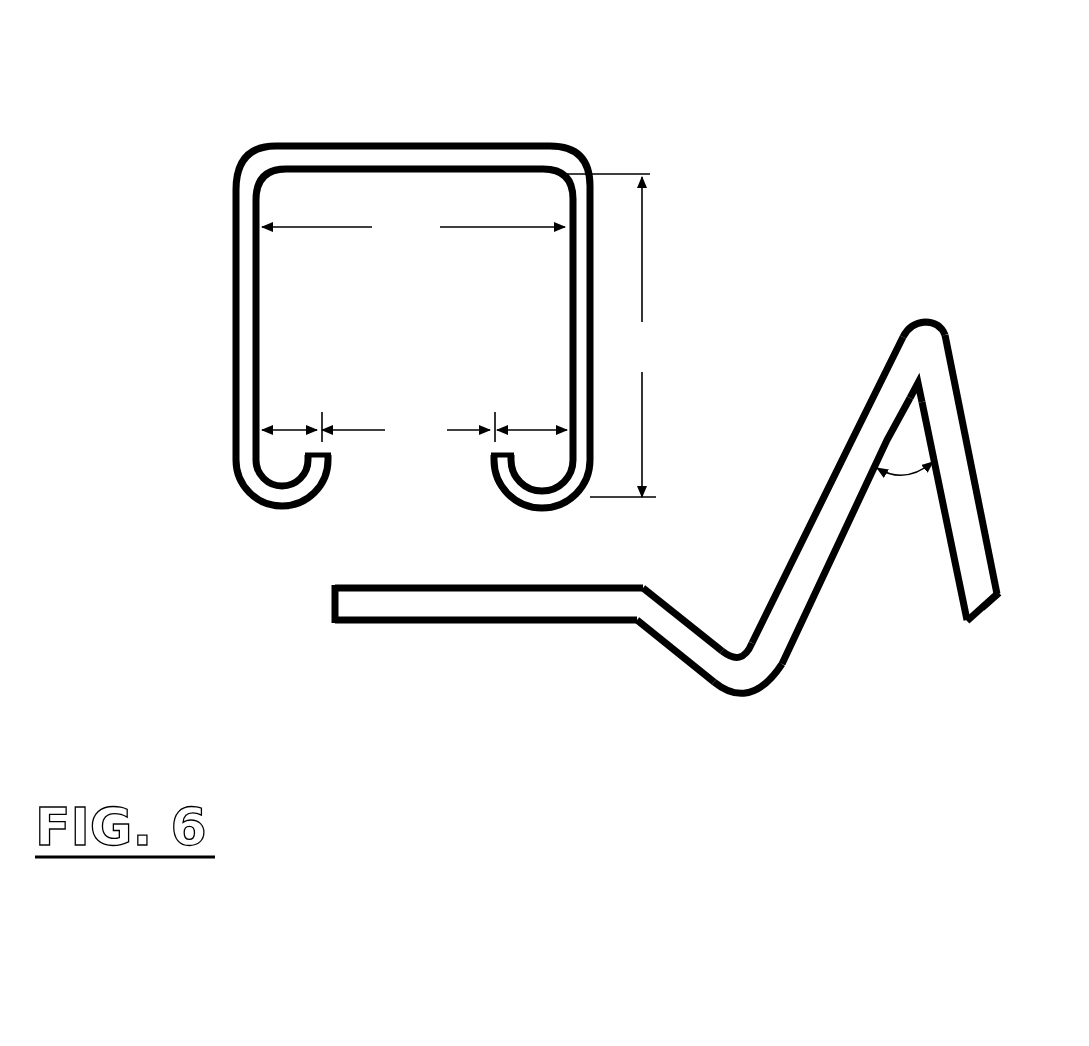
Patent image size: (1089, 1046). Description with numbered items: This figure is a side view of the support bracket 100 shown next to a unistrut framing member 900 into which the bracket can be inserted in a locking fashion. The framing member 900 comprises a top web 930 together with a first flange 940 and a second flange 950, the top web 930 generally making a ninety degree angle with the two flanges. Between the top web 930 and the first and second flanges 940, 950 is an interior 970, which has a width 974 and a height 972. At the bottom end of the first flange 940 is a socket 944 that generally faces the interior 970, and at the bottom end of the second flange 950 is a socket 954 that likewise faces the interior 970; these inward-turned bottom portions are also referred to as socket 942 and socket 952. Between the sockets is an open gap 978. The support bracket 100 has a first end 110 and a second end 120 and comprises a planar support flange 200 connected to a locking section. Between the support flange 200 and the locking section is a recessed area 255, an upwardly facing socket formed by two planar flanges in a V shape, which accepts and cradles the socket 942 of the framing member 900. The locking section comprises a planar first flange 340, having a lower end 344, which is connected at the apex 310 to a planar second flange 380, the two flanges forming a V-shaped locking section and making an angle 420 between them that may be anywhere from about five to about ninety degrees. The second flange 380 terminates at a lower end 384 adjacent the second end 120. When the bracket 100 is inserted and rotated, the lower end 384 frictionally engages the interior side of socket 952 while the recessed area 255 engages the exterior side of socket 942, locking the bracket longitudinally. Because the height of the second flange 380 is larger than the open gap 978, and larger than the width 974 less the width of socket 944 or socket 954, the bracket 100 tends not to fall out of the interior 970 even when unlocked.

The framing member 900 is at (156, 128).
The top web 930 is at (395, 150).
The first flange 940 is at (233, 300).
The second flange 950 is at (566, 348).
The socket 942 is at (287, 494).
The socket 952 is at (537, 505).
The interior 970 is at (430, 342).
The width 974 is at (413, 227).
The height 972 is at (609, 335).
The socket 944 is at (292, 422).
The open gap 978 is at (408, 427).
The socket 954 is at (532, 416).
The support bracket 100 is at (867, 335).
The support flange 200 is at (512, 607).
The first end 110 is at (330, 612).
The recessed area 255 is at (722, 612).
The lower end 344 is at (737, 688).
The first flange 340 is at (840, 505).
The apex 310 is at (932, 320).
The second flange 380 is at (963, 482).
The lower end 384 is at (978, 628).
The second end 120 is at (998, 600).
The angle 420 is at (903, 477).